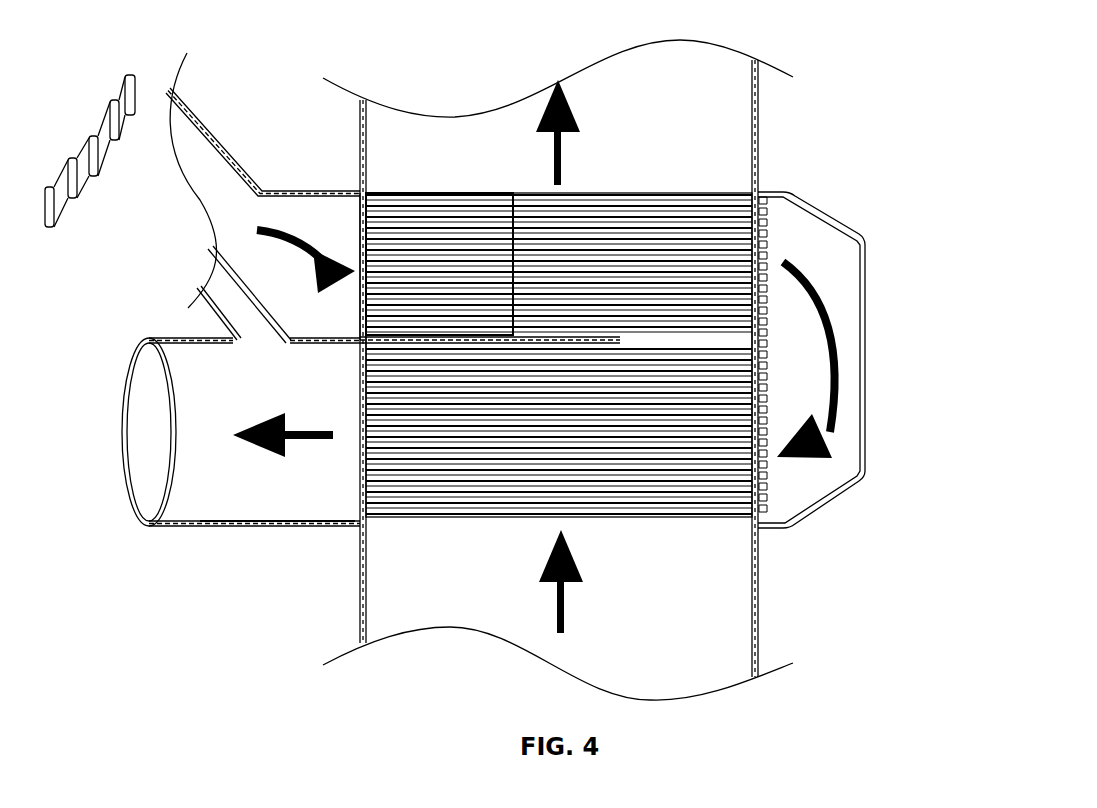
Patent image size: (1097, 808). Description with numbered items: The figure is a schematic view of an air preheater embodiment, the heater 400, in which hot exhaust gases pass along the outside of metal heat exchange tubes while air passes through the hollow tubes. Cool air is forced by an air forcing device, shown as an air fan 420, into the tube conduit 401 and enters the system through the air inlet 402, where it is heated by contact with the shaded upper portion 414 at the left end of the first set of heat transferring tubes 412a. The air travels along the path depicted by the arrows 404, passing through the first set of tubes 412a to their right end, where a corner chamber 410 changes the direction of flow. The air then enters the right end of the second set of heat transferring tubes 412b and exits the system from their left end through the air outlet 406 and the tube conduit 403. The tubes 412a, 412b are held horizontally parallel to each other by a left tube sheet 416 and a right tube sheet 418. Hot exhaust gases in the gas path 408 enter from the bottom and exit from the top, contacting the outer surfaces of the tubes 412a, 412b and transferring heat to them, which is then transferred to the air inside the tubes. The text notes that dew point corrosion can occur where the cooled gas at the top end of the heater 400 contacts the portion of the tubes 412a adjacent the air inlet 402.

The heater 400 is at (658, 368).
The tube conduit 401 is at (277, 190).
The air inlet 402 is at (345, 228).
The tube conduit 403 is at (290, 525).
The arrows 404 is at (267, 253).
The air outlet 406 is at (200, 512).
The gas path 408 is at (563, 148).
The corner chamber 410 is at (826, 242).
The first set of heat transferring tubes 412a is at (690, 318).
The second set of heat transferring tubes 412b is at (702, 483).
The upper portion 414 is at (440, 193).
The left tube sheet 416 is at (374, 581).
The right tube sheet 418 is at (760, 127).
The air fan 420 is at (88, 178).